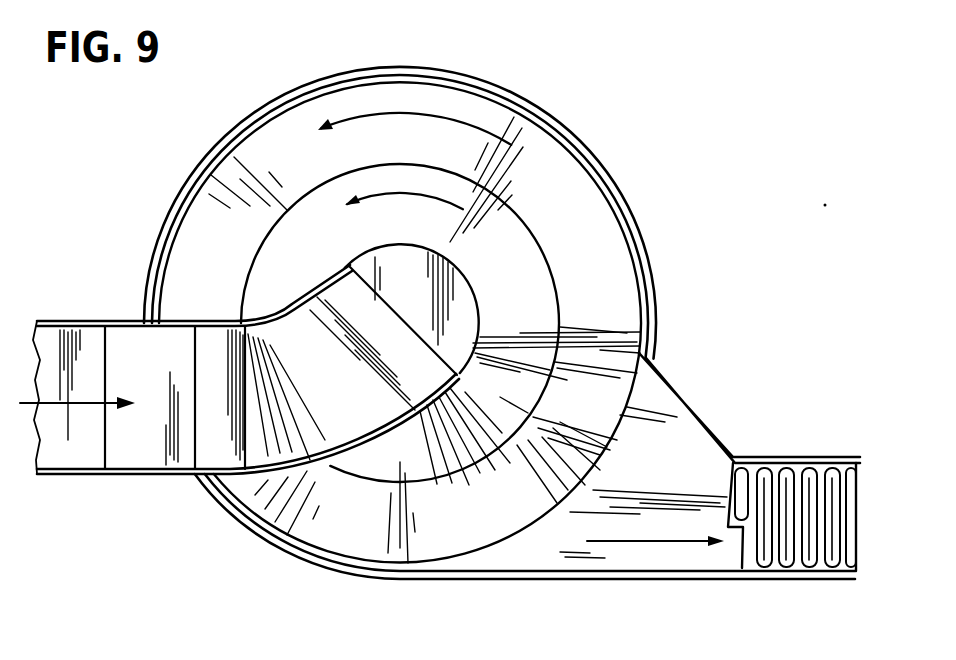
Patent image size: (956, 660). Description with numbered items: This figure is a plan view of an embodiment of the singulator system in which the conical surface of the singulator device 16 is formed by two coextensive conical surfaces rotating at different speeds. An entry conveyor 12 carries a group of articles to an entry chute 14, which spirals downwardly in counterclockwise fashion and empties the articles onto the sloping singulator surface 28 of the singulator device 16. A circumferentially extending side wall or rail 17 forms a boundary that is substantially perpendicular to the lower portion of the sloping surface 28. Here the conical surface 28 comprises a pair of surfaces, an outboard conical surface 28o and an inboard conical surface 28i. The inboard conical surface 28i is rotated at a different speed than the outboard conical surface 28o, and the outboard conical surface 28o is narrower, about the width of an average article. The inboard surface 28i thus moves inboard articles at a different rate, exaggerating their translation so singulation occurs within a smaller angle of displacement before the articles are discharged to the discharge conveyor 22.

The entry conveyor 12 is at (98, 476).
The entry chute 14 is at (318, 296).
The singulator device 16 is at (627, 193).
The side wall or rail 17 is at (520, 96).
The discharge conveyor 22 is at (793, 457).
The sloping singulator surface 28 is at (688, 400).
The inboard conical surface 28i is at (528, 310).
The outboard conical surface 28o is at (616, 275).